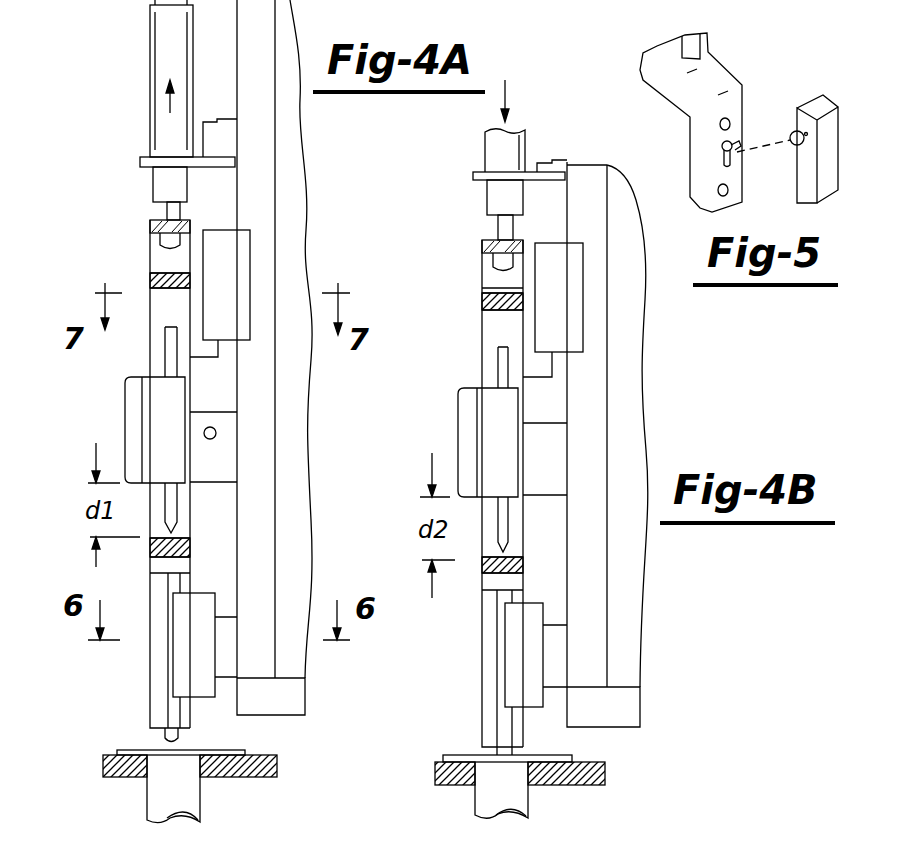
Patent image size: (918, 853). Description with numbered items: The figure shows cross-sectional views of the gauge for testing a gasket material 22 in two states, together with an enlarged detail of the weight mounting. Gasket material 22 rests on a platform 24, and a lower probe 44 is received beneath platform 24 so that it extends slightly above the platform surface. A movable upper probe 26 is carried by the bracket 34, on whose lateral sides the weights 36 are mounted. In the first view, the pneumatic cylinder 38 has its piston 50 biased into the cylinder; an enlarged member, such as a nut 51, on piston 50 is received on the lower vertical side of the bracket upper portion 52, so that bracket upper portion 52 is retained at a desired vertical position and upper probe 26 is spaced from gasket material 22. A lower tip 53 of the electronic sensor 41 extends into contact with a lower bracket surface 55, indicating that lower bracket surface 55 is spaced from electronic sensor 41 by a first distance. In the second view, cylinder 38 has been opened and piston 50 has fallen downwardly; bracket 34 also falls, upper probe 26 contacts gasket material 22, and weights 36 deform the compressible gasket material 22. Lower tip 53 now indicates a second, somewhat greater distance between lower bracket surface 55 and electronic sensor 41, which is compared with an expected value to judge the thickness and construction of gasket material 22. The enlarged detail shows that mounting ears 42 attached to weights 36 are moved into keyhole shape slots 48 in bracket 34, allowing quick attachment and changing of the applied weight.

In FIG. 4A, the gasket material 22 is at (217, 752).
In FIG. 4B, the gasket material 22 is at (465, 757).
In FIG. 4A, the platform 24 is at (250, 778).
In FIG. 4B, the platform 24 is at (437, 770).
In FIG. 4A, the upper probe 26 is at (157, 736).
In FIG. 4B, the upper probe 26 is at (513, 752).
In FIG. 5, the bracket 34 is at (672, 88).
In FIG. 5, the weights 36 is at (833, 180).
In FIG. 4A, the pneumatic cylinder 38 is at (155, 123).
In FIG. 4B, the pneumatic cylinder 38 is at (492, 194).
In FIG. 4A, the electronic sensor 41 is at (128, 398).
In FIG. 4B, the electronic sensor 41 is at (466, 422).
In FIG. 5, the mounting ears 42 is at (790, 138).
In FIG. 4A, the lower probe 44 is at (155, 797).
In FIG. 4B, the lower probe 44 is at (480, 805).
In FIG. 5, the keyhole shape slots 48 is at (740, 148).
In FIG. 4A, the piston 50 is at (165, 210).
In FIG. 4B, the piston 50 is at (497, 229).
In FIG. 4A, the nut 51 is at (158, 240).
In FIG. 4B, the nut 51 is at (497, 265).
In FIG. 4A, the bracket upper portion 52 is at (186, 228).
In FIG. 4B, the bracket upper portion 52 is at (485, 243).
In FIG. 4A, the lower tip 53 is at (177, 524).
In FIG. 4B, the lower tip 53 is at (513, 528).
In FIG. 4A, the lower bracket surface 55 is at (188, 537).
In FIG. 4B, the lower bracket surface 55 is at (493, 577).